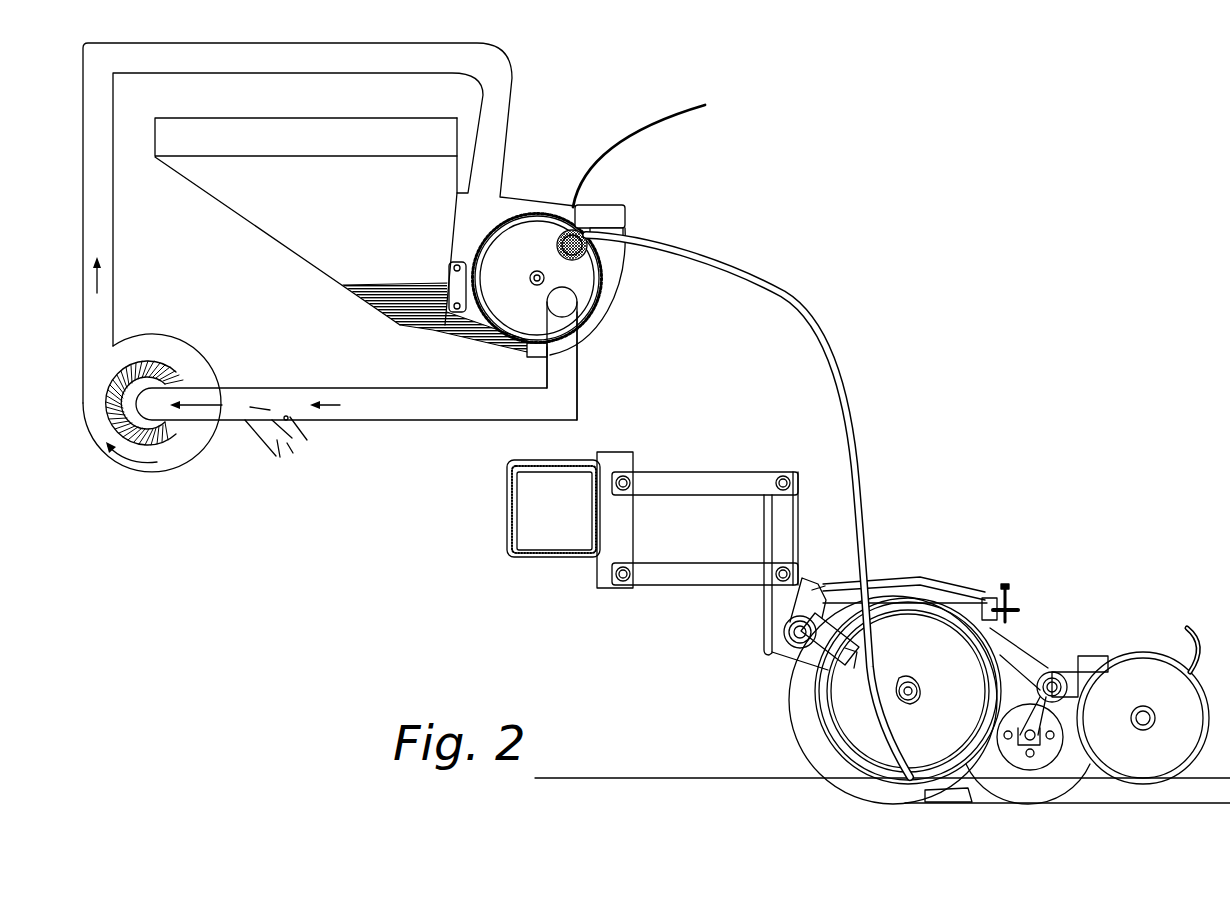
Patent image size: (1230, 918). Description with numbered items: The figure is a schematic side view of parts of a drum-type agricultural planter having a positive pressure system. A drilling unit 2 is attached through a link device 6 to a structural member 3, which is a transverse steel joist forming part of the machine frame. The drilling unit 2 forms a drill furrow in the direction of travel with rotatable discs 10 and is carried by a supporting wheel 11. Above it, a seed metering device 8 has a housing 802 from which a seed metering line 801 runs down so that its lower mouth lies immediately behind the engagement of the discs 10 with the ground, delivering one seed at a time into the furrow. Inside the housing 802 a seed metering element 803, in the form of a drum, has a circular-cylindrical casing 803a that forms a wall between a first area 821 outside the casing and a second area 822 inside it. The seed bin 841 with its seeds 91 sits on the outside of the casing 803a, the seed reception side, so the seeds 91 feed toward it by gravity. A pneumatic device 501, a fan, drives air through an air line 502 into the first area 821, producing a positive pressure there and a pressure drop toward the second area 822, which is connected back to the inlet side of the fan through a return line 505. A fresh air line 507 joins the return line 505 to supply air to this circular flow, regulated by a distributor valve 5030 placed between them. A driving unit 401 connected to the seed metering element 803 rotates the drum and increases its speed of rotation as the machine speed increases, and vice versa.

The drilling unit 2 is at (882, 632).
The structural member 3 is at (507, 537).
The link device 6 is at (680, 573).
The seed metering device 8 is at (598, 273).
The rotatable disc 10 is at (832, 760).
The supporting wheel 11 is at (847, 713).
The seeds 91 is at (387, 317).
The driving unit 401 is at (675, 150).
The pneumatic device 501 is at (178, 457).
The air line 502 is at (500, 120).
The return line 505 is at (405, 410).
The fresh air line 507 is at (278, 458).
The distributor valve 5030 is at (273, 410).
The seed metering line 801 is at (797, 297).
The housing 802 is at (512, 197).
The seed metering element 803 is at (577, 272).
The circular-cylindrical casing 803a is at (607, 313).
The first area 821 is at (596, 212).
The second area 822 is at (583, 315).
The seed bin 841 is at (307, 228).